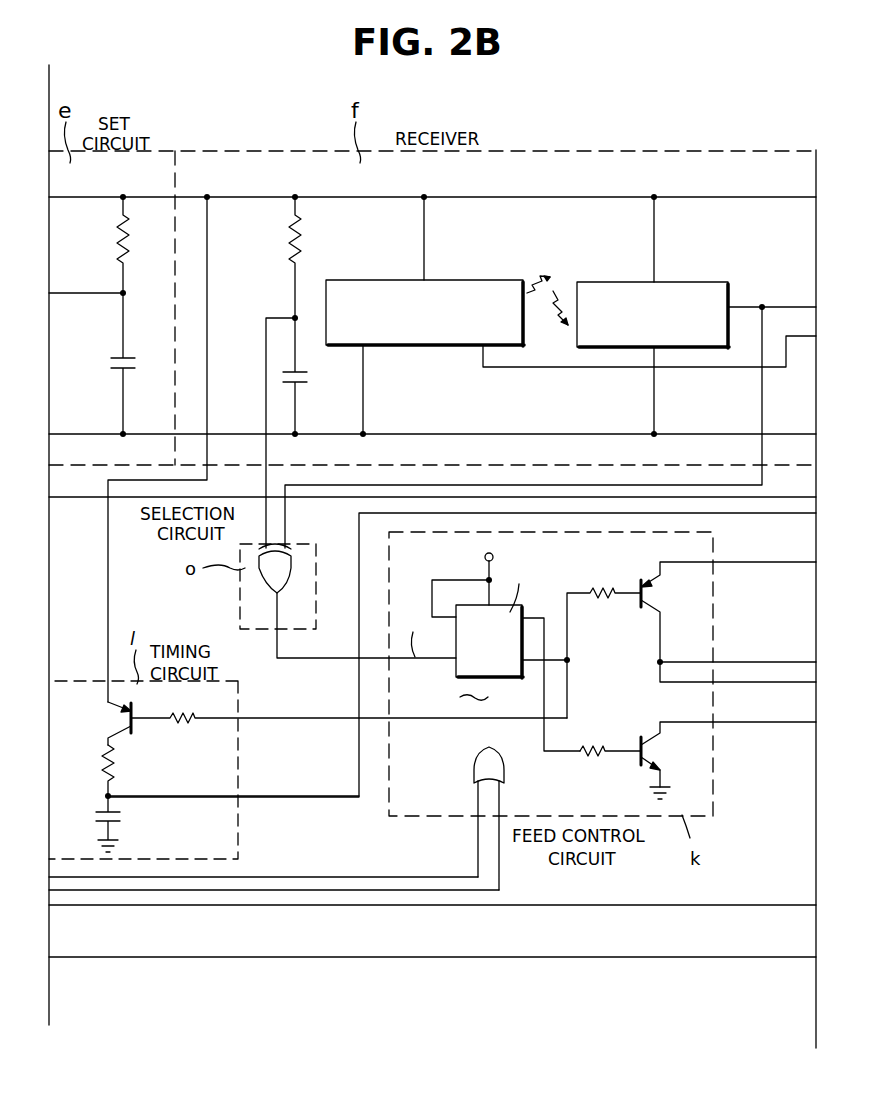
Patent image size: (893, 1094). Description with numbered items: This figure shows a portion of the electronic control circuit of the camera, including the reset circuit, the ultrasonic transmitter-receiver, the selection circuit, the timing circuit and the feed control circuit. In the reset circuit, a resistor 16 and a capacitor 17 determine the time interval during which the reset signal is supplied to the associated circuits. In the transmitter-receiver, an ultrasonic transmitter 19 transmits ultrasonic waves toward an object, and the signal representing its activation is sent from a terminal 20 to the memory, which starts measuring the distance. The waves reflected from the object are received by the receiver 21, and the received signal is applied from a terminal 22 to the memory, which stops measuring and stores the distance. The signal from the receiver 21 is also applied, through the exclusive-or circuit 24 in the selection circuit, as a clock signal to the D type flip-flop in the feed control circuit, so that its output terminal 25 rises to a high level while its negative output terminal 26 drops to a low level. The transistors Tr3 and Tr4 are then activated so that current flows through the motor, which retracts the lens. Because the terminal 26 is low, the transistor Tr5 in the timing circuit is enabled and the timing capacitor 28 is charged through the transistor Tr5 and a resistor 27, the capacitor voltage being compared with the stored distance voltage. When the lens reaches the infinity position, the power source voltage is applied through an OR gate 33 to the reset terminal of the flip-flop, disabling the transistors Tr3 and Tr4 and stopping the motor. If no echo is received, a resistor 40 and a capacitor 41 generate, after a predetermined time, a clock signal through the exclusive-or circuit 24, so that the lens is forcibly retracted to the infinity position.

The resistor 16 is at (122, 240).
The capacitor 17 is at (122, 364).
The ultrasonic transmitter 19 is at (426, 346).
The terminal 20 is at (520, 368).
The receiver 21 is at (606, 282).
The terminal 22 is at (754, 307).
The exclusive-or circuit 24 is at (271, 580).
The output terminal 25 is at (540, 618).
The negative output terminal 26 is at (528, 662).
The resistor 27 is at (114, 758).
The timing capacitor 28 is at (121, 821).
The OR gate 33 is at (479, 770).
The resistor 40 is at (292, 243).
The capacitor 41 is at (307, 379).
The transistor Tr3 is at (654, 607).
The transistor Tr4 is at (650, 733).
The transistor Tr5 is at (115, 722).